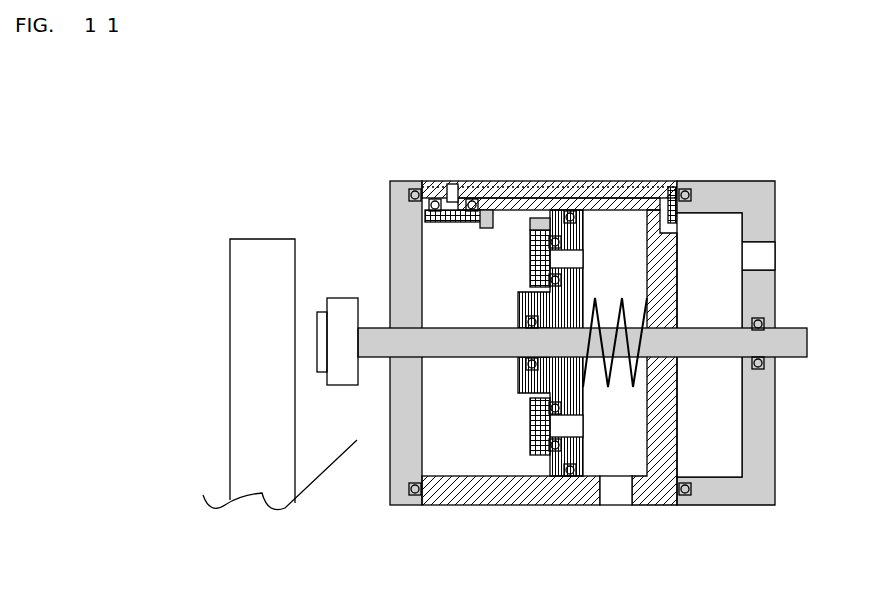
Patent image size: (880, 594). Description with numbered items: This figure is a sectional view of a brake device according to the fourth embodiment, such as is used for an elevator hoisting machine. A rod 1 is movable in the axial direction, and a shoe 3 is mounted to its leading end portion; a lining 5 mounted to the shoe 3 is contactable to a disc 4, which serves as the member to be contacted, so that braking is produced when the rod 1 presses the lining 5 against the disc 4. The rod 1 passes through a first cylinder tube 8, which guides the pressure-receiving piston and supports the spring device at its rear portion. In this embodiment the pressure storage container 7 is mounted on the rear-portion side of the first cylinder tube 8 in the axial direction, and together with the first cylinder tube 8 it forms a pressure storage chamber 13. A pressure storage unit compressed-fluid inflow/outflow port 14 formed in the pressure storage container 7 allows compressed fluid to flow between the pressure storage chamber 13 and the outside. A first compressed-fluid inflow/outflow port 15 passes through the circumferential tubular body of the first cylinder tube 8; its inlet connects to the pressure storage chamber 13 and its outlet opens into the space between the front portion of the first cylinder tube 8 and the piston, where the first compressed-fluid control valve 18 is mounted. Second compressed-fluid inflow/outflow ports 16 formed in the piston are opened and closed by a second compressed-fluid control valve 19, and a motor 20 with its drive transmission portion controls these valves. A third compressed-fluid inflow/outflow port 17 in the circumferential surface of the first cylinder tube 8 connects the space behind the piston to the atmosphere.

The rod 1 is at (792, 347).
The shoe 3 is at (343, 367).
The disc 4 is at (258, 318).
The lining 5 is at (323, 338).
The pressure storage container 7 is at (760, 212).
The first cylinder tube 8 is at (652, 490).
The pressure storage chamber 13 is at (723, 410).
The pressure storage unit compressed-fluid inflow/outflow port 14 is at (760, 258).
The first compressed-fluid inflow/outflow port 15 is at (618, 193).
The second compressed-fluid inflow/outflow port 16 is at (563, 259).
The third compressed-fluid inflow/outflow port 17 is at (615, 492).
The first compressed-fluid control valve 18 is at (464, 189).
The second compressed-fluid control valve 19 is at (537, 437).
The motor 20 is at (538, 222).